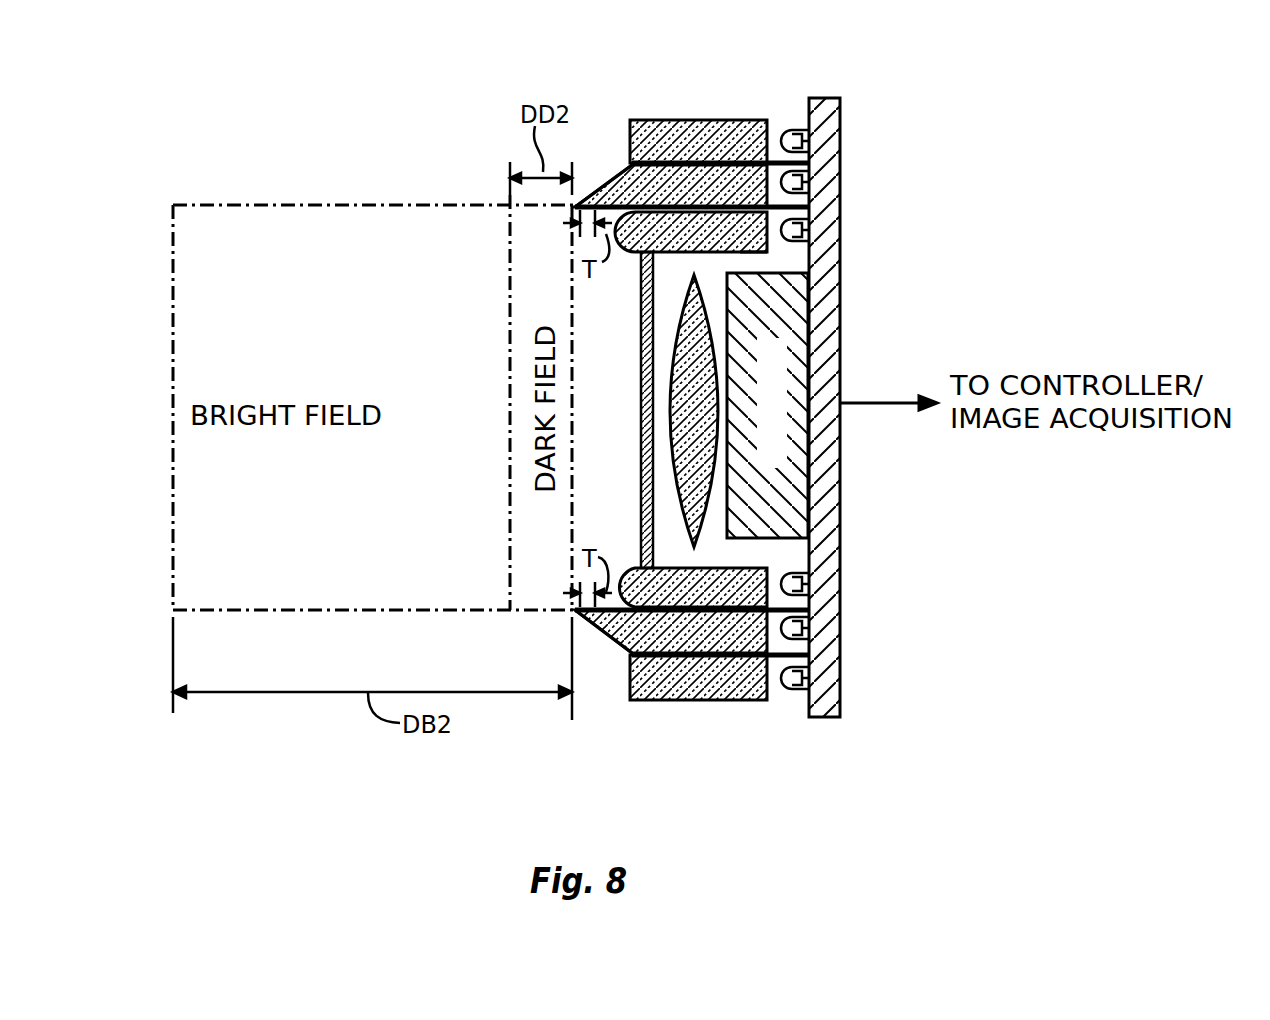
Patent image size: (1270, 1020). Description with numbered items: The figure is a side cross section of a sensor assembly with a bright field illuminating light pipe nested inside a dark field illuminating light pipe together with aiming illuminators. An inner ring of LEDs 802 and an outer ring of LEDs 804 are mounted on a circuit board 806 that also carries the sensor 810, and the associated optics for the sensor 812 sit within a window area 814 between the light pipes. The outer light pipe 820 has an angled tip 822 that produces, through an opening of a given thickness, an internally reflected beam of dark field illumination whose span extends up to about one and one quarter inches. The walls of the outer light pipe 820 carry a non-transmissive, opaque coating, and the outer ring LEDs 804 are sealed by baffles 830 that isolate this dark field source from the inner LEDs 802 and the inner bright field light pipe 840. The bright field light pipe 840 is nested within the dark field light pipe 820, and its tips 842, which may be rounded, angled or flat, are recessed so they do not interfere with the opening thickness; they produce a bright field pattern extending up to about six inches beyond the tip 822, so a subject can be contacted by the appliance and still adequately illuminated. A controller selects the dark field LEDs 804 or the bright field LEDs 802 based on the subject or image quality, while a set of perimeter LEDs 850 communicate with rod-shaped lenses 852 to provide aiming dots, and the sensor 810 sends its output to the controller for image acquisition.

The inner ring of LEDs 802 is at (800, 248).
The outer ring of LEDs 804 is at (803, 183).
The circuit board 806 is at (840, 417).
The sensor 810 is at (803, 455).
The optics for the sensor 812 is at (690, 550).
The window area 814 is at (645, 350).
The outer light pipe 820 is at (728, 185).
The tip 822 is at (599, 168).
The baffles 830 is at (808, 163).
The inner bright field light pipe 840 is at (767, 253).
The tips 842 is at (632, 252).
The perimeter LEDs 850 is at (790, 128).
The lenses 852 is at (690, 121).